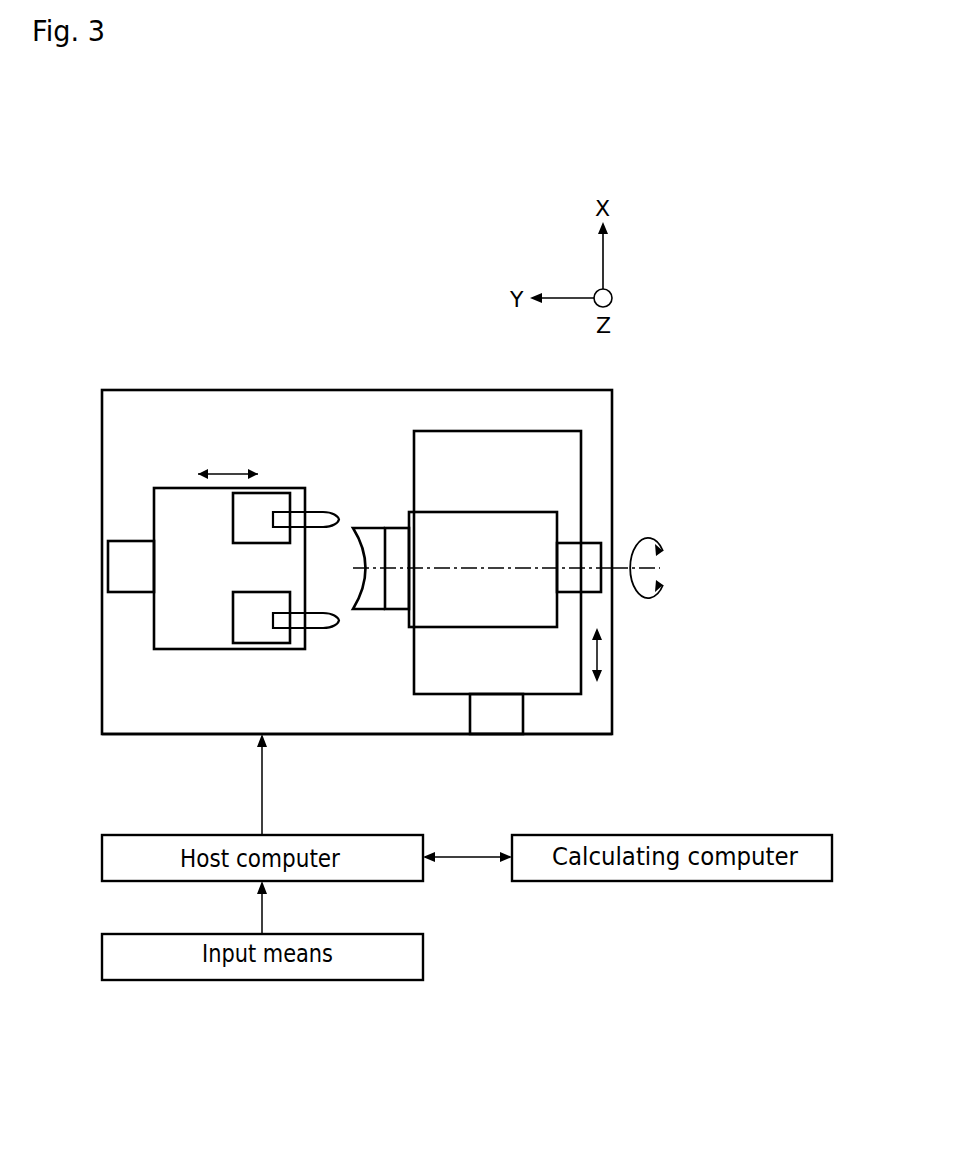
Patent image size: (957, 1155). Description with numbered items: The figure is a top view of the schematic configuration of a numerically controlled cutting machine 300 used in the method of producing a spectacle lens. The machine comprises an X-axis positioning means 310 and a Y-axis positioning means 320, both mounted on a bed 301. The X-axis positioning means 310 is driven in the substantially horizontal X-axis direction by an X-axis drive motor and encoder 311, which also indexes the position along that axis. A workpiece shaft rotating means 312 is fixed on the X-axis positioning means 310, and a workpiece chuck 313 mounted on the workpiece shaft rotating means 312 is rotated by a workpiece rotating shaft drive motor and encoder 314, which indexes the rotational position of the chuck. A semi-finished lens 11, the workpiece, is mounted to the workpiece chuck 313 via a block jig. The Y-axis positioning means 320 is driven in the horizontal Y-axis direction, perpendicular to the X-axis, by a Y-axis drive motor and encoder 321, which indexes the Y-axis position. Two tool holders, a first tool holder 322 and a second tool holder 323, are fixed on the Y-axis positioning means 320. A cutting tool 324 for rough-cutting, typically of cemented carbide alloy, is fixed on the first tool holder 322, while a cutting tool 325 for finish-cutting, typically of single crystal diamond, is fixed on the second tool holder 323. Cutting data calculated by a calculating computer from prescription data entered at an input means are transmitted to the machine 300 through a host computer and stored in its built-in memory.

The numerically controlled cutting machine 300 is at (126, 382).
The bed 301 is at (102, 697).
The X-axis positioning means 310 is at (557, 694).
The encoder 311 is at (502, 735).
The workpiece shaft rotating means 312 is at (475, 512).
The workpiece chuck 313 is at (398, 527).
The encoder 314 is at (592, 543).
The Y-axis positioning means 320 is at (180, 649).
The encoder 321 is at (125, 593).
The first tool holder 322 is at (282, 490).
The second tool holder 323 is at (244, 649).
The cutting tool for rough-cutting 324 is at (323, 510).
The cutting tool for finish-cutting 325 is at (335, 628).
The semi-finished lens 11 is at (375, 610).